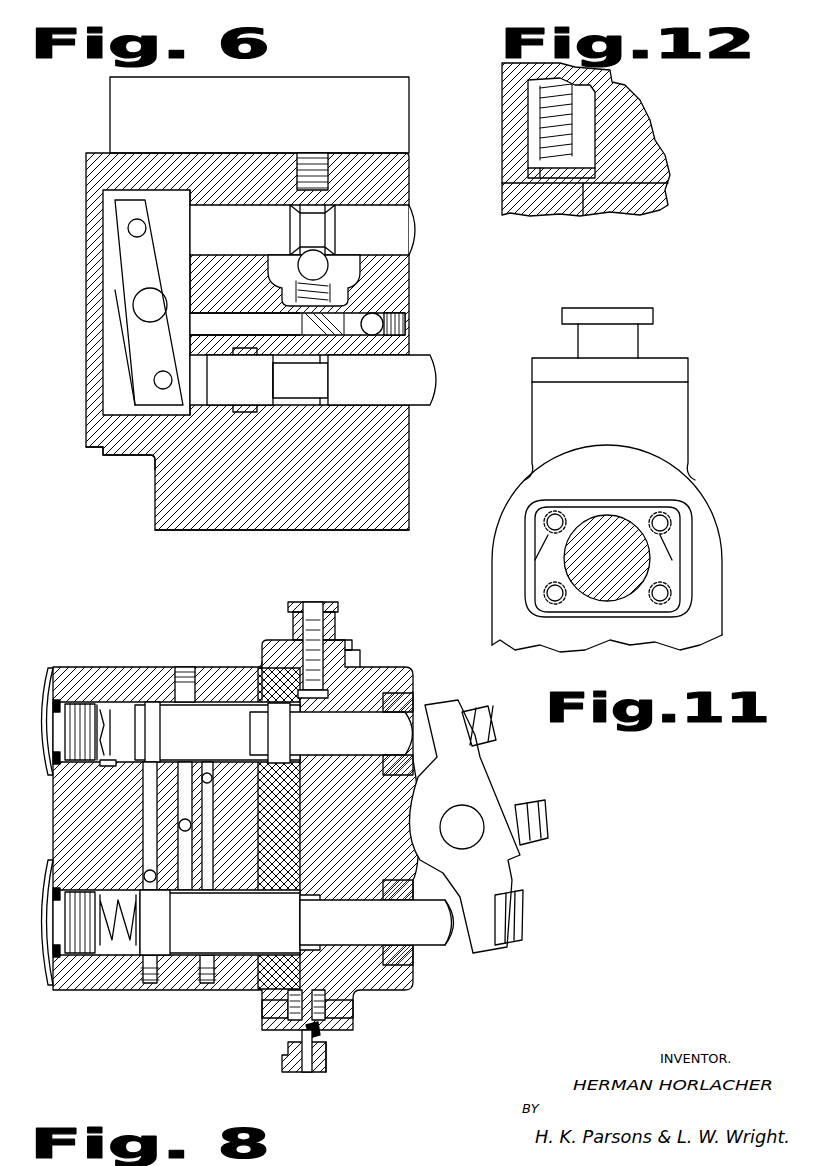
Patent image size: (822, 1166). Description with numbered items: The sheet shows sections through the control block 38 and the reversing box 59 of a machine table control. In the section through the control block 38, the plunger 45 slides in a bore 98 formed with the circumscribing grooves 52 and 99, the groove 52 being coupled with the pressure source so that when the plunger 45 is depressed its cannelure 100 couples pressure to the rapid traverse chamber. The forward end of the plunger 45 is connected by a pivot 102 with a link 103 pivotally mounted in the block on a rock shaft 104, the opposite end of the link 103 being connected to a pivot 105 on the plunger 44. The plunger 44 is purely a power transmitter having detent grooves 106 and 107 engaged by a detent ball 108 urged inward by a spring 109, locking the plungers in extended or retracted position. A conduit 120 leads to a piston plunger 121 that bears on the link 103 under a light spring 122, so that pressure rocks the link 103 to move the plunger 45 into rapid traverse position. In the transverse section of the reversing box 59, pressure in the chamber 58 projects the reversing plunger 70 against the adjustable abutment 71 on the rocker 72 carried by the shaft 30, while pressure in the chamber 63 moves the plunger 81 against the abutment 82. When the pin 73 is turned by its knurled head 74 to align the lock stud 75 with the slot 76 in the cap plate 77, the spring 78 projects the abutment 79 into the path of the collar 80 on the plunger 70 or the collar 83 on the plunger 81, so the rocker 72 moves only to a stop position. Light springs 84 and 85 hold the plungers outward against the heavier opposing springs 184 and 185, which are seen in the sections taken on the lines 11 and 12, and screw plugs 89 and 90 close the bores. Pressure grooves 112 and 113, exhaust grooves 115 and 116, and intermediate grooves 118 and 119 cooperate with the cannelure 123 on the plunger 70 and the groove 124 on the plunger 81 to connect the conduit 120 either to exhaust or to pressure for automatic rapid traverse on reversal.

In FIG. 6, the control block 38 is at (404, 170).
In FIG. 6, the plunger 44 is at (418, 232).
In FIG. 6, the plunger 45 is at (441, 377).
In FIG. 6, the groove 52 is at (158, 458).
In FIG. 6, the bore 98 is at (190, 484).
In FIG. 6, the groove 99 is at (330, 415).
In FIG. 6, the cannelure 100 is at (305, 400).
In FIG. 6, the pivot 102 is at (160, 380).
In FIG. 6, the link 103 is at (122, 300).
In FIG. 6, the rock shaft 104 is at (152, 298).
In FIG. 6, the pivot 105 is at (136, 228).
In FIG. 6, the detent groove 106 is at (290, 212).
In FIG. 6, the detent groove 107 is at (322, 208).
In FIG. 6, the detent ball 108 is at (320, 270).
In FIG. 6, the spring 109 is at (330, 300).
In FIG. 6, the conduit 120 is at (373, 323).
In FIG. 6, the piston plunger 121 is at (196, 325).
In FIG. 6, the spring 122 is at (345, 318).
In FIG. 8, the section line 11 is at (258, 700).
In FIG. 11, the section line 12 is at (720, 522).
In FIG. 8, the shaft 30 is at (470, 800).
In FIG. 8, the piston chamber 58 is at (92, 955).
In FIG. 8, the reversing box 59 is at (60, 820).
In FIG. 8, the piston chamber 63 is at (92, 700).
In FIG. 8, the reversing plunger 70 is at (438, 950).
In FIG. 8, the adjustable abutment 71 is at (470, 948).
In FIG. 8, the rocker 72 is at (490, 772).
In FIG. 8, the pin 73 is at (306, 1072).
In FIG. 8, the knurled head 74 is at (332, 1060).
In FIG. 8, the lock stud 75 is at (318, 1030).
In FIG. 8, the slot 76 is at (296, 1032).
In FIG. 8, the cap plate 77 is at (352, 1022).
In FIG. 8, the spring 78 is at (262, 1010).
In FIG. 8, the abutment 79 is at (300, 705).
In FIG. 8, the collar 80 is at (312, 925).
In FIG. 8, the reversing plunger 81 is at (245, 700).
In FIG. 8, the abutment 82 is at (420, 714).
In FIG. 8, the collar 83 is at (278, 740).
In FIG. 8, the spring 84 is at (112, 905).
In FIG. 8, the spring 85 is at (105, 700).
In FIG. 8, the screw plug 89 is at (48, 870).
In FIG. 8, the screw plug 90 is at (48, 780).
In FIG. 8, the pressure groove 112 is at (220, 960).
In FIG. 8, the pressure groove 113 is at (232, 700).
In FIG. 8, the groove 115 is at (145, 700).
In FIG. 8, the groove 116 is at (140, 960).
In FIG. 8, the groove 118 is at (178, 700).
In FIG. 8, the groove 119 is at (190, 955).
In FIG. 8, the cannelure 123 is at (190, 920).
In FIG. 8, the groove 124 is at (175, 760).
In FIG. 11, the compression spring 184 is at (668, 530).
In FIG. 12, the compression spring 185 is at (540, 118).
In FIG. 11, the compression spring 185 is at (720, 530).